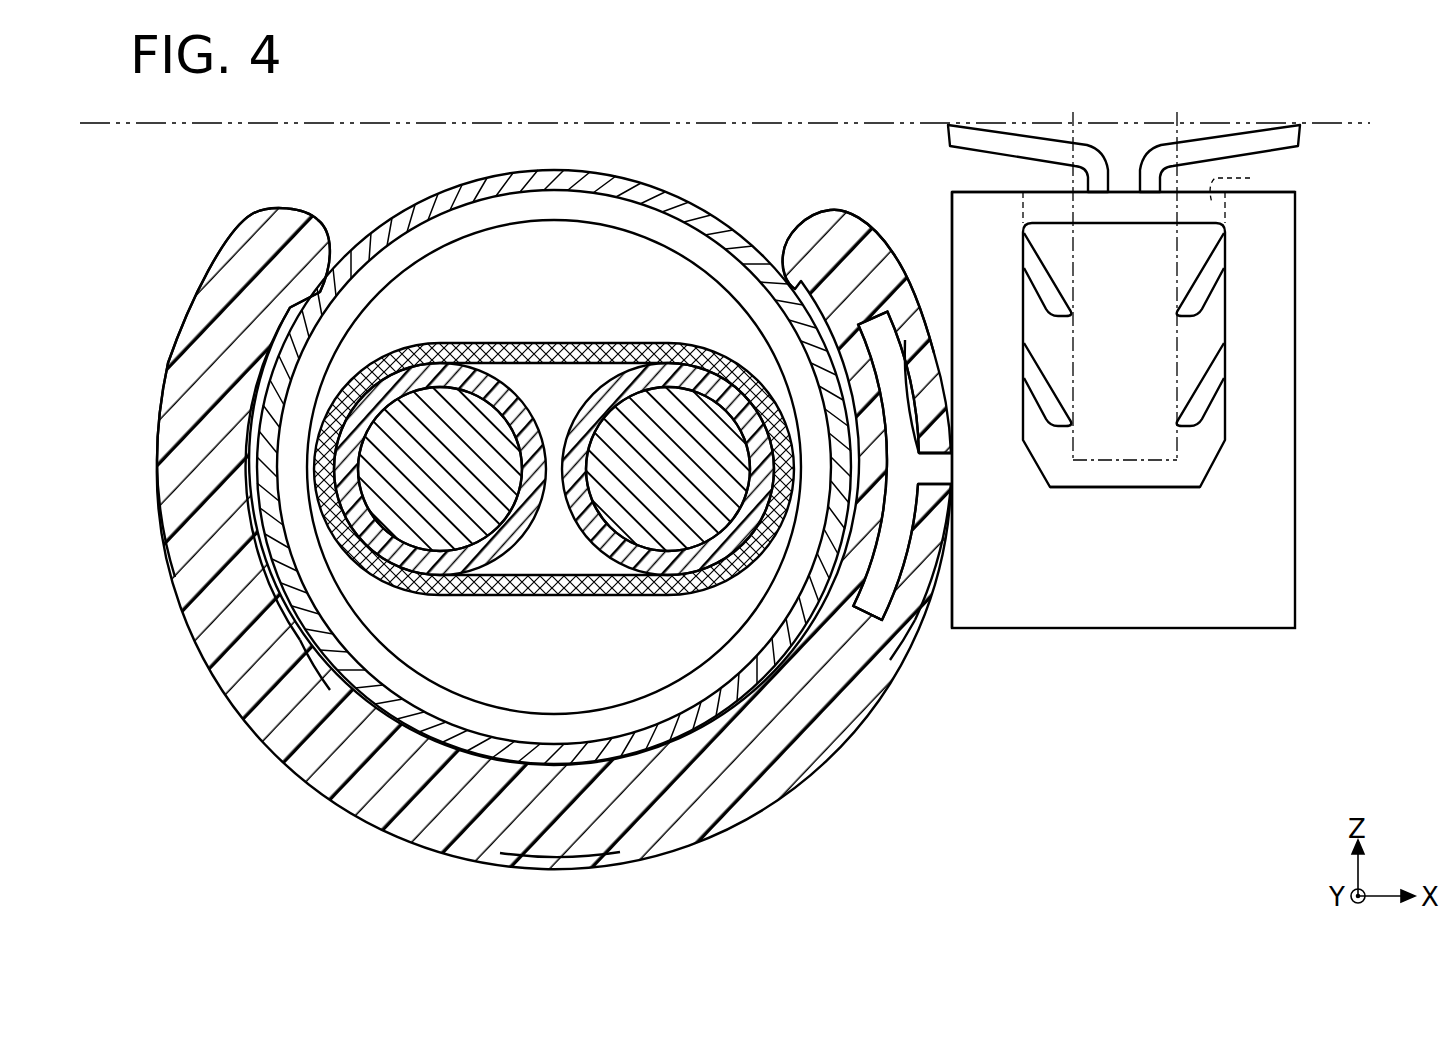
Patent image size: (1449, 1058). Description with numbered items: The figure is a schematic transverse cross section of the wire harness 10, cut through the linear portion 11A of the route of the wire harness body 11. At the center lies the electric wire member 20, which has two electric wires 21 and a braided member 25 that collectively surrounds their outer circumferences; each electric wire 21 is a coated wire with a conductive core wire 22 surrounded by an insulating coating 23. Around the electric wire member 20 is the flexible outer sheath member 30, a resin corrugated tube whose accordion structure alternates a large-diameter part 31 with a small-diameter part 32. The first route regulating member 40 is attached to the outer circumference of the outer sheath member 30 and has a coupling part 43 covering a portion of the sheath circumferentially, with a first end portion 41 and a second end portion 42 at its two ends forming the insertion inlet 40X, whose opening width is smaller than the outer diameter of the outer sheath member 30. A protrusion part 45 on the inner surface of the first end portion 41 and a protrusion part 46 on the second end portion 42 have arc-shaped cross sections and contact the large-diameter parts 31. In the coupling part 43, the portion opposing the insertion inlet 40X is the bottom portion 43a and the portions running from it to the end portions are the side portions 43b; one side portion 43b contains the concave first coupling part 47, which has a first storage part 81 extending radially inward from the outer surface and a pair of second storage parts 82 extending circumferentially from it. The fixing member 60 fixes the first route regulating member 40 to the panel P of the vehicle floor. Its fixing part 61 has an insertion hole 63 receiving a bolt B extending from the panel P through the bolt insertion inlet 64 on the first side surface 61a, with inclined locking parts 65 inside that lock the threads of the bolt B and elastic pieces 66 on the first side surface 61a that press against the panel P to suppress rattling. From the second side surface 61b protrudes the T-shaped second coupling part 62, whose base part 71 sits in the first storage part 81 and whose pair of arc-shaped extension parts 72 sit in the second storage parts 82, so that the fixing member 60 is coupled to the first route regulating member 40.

The wire harness 10 is at (561, 534).
The wire harness body 11 is at (293, 634).
The linear portion 11A is at (248, 713).
The electric wire member 20 is at (554, 521).
The electric wire 21 is at (554, 521).
The core wire 22 is at (437, 545).
The insulating coating 23 is at (455, 562).
The braided member 25 is at (590, 598).
The outer sheath member 30 is at (554, 449).
The large-diameter part 31 is at (636, 190).
The small-diameter part 32 is at (552, 226).
The first route regulating member 40 is at (561, 534).
The insertion inlet 40X is at (322, 255).
The first end portion 41 is at (268, 243).
The second end portion 42 is at (822, 248).
The coupling part 43 is at (775, 762).
The bottom portion 43a is at (565, 838).
The side portion 43b is at (173, 514).
The protrusion part 45 is at (326, 298).
The protrusion part 46 is at (773, 306).
The first coupling part 47 is at (862, 628).
The fixing member 60 is at (1109, 381).
The fixing part 61 is at (1282, 333).
The first side surface 61a is at (1043, 192).
The second side surface 61b is at (952, 208).
The second coupling part 62 is at (897, 612).
The insertion hole 63 is at (1148, 482).
The bolt insertion inlet 64 is at (1250, 182).
The locking part 65 is at (1065, 302).
The elastic piece 66 is at (1015, 128).
The base part 71 is at (936, 470).
The extension part 72 is at (907, 300).
The first storage part 81 is at (948, 462).
The second storage part 82 is at (924, 381).
The bolt B is at (1100, 465).
The panel P is at (182, 127).